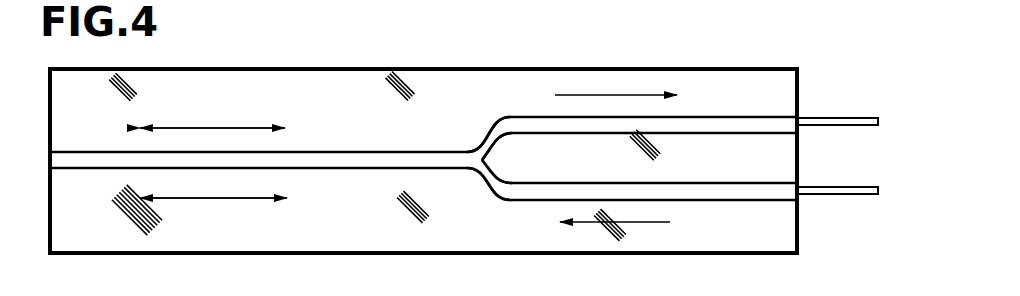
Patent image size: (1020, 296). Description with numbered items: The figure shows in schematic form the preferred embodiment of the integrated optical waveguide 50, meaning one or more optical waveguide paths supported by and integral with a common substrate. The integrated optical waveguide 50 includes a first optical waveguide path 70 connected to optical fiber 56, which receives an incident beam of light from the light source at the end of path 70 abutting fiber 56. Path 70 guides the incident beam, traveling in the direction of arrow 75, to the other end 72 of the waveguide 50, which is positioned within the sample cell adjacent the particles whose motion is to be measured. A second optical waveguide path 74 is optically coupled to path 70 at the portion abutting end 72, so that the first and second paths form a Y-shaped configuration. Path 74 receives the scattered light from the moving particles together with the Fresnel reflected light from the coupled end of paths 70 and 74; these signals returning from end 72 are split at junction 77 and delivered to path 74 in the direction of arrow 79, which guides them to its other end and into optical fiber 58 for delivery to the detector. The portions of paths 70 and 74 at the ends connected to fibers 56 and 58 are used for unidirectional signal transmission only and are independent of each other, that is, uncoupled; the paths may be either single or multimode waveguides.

The integrated optical waveguide 50 is at (311, 46).
The other end of waveguide 72 is at (50, 254).
The first optical waveguide path 70 is at (305, 152).
The second optical waveguide path 74 is at (752, 113).
The junction 77 is at (473, 174).
The arrow 79 is at (560, 95).
The arrow 75 is at (670, 222).
The optical fiber 58 is at (853, 117).
The optical fiber 56 is at (861, 186).